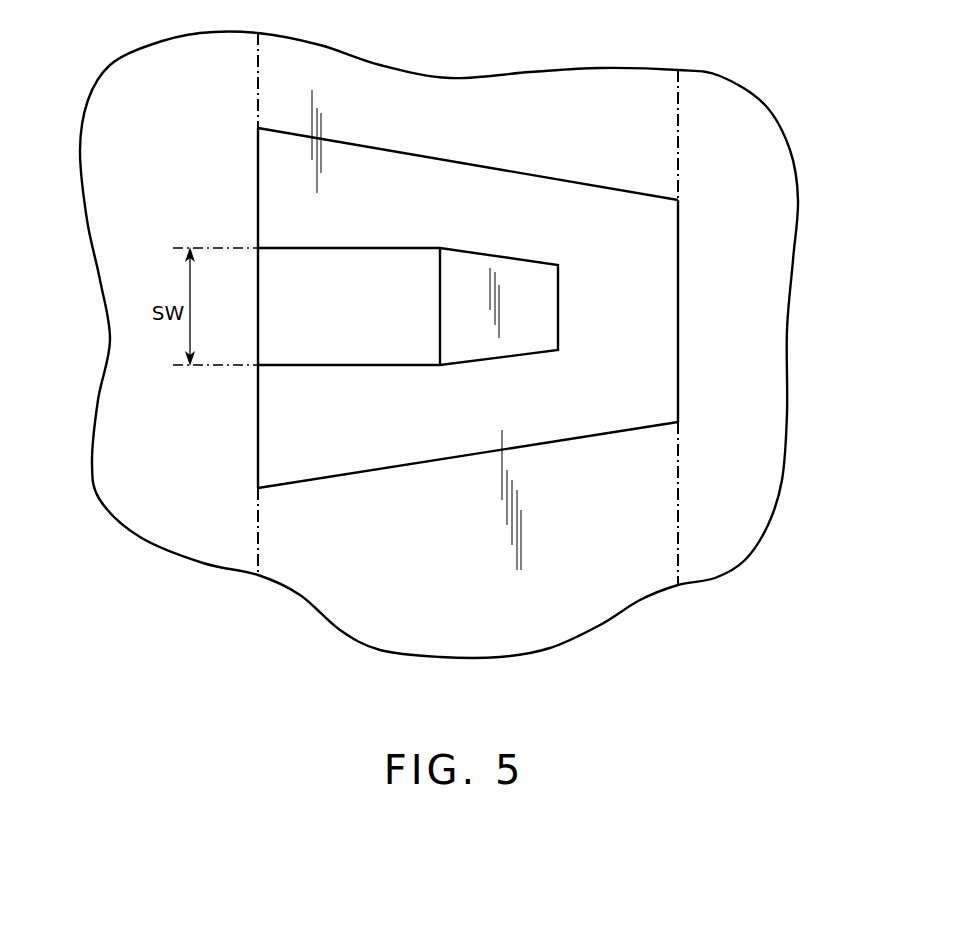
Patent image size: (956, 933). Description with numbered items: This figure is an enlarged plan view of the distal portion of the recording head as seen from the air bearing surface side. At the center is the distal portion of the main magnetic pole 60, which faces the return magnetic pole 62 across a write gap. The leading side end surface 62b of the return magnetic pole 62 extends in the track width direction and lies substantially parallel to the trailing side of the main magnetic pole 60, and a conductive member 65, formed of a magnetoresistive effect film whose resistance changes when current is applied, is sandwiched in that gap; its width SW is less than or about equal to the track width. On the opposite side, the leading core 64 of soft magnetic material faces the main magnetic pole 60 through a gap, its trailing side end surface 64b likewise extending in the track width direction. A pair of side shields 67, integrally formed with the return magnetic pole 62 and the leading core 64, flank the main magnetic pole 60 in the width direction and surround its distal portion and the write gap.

The main magnetic pole 60 is at (523, 336).
The return magnetic pole 62 is at (128, 348).
The leading side end surface 62b is at (258, 412).
The leading core 64 is at (762, 304).
The trailing side end surface 64b is at (678, 374).
The conductive member 65 is at (352, 352).
The side shields 67 is at (527, 96).